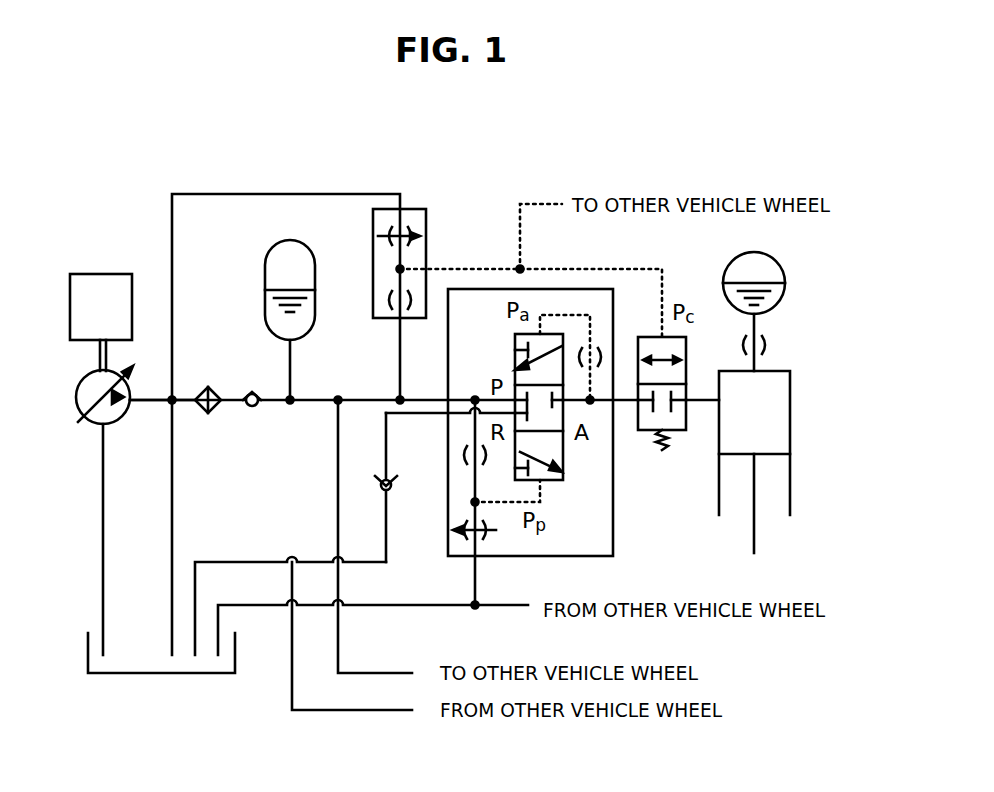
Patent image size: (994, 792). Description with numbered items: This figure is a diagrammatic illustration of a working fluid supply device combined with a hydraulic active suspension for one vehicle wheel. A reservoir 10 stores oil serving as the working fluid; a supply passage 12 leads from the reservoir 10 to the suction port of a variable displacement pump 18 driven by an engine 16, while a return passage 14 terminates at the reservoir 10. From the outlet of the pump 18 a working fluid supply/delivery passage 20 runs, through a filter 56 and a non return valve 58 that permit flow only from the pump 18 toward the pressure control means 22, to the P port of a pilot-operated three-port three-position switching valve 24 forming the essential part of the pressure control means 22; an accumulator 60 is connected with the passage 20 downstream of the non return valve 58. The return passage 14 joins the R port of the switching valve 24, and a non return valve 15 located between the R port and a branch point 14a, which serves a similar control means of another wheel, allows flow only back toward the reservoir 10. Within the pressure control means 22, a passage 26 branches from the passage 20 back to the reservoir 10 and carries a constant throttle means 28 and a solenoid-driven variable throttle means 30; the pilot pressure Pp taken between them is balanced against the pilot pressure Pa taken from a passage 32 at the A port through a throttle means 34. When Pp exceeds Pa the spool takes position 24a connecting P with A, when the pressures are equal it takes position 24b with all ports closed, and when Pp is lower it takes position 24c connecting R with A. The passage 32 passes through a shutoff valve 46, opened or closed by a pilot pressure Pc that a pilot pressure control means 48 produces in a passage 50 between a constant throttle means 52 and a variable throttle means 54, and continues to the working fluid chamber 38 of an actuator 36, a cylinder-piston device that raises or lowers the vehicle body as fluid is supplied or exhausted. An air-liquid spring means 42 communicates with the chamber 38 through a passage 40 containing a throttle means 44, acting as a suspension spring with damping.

The reservoir 10 is at (133, 673).
The supply passage 12 is at (104, 527).
The return passage 14 is at (236, 562).
The branch point 14a is at (292, 562).
The non return valve 15 is at (393, 487).
The engine 16 is at (104, 274).
The pump 18 is at (80, 389).
The working fluid supply/delivery passage 20 is at (152, 401).
The pressure control means 22 is at (613, 521).
The switching valve 24 is at (515, 338).
The position 24a is at (558, 480).
The position 24b is at (564, 425).
The position 24c is at (515, 357).
The passage 26 is at (477, 580).
The constant throttle means 28 is at (460, 455).
The variable throttle means 30 is at (460, 531).
The passage 32 is at (622, 404).
The throttle means 34 is at (600, 354).
The actuator 36 is at (790, 384).
The working fluid chamber 38 is at (770, 413).
The passage 40 is at (758, 358).
The air-liquid spring means 42 is at (736, 257).
The throttle means 44 is at (766, 345).
The shutoff valve 46 is at (686, 350).
The pilot pressure control means 48 is at (426, 236).
The passage 50 is at (232, 194).
The constant throttle means 52 is at (380, 300).
The variable throttle means 54 is at (380, 236).
The filter 56 is at (208, 387).
The non return valve 58 is at (252, 407).
The accumulator 60 is at (265, 276).